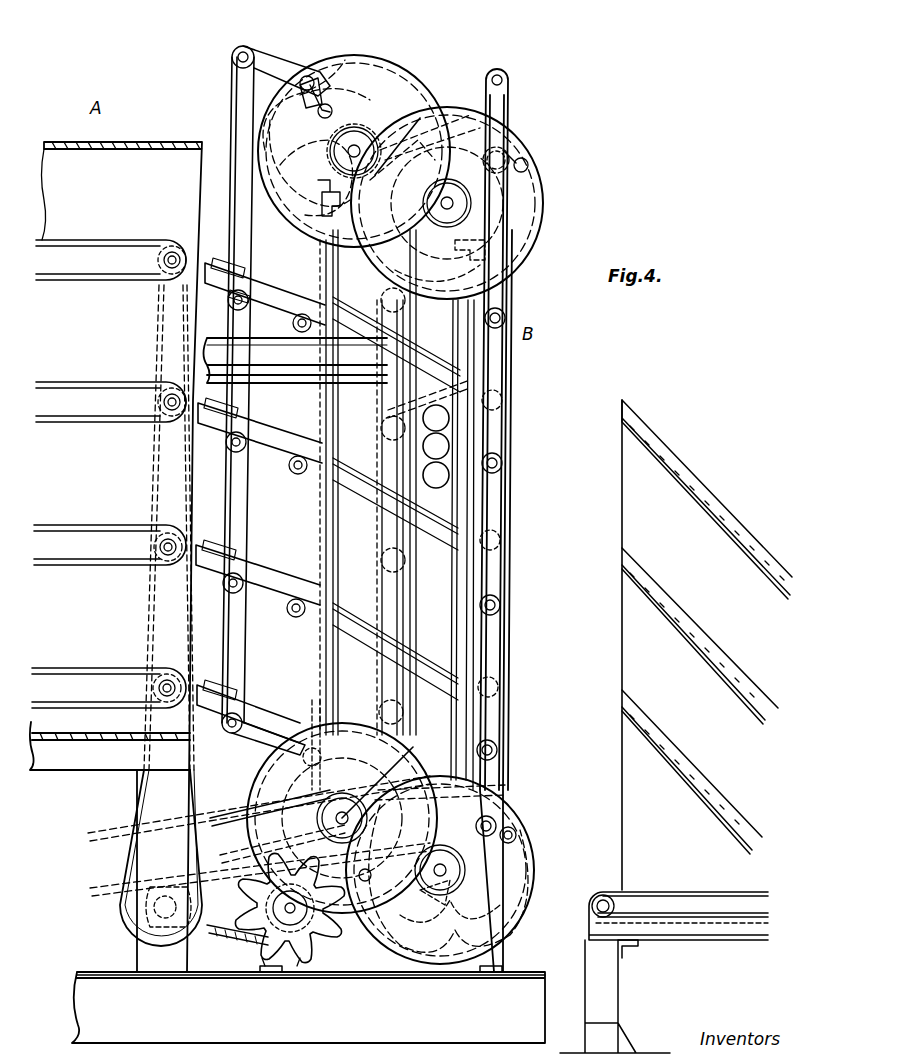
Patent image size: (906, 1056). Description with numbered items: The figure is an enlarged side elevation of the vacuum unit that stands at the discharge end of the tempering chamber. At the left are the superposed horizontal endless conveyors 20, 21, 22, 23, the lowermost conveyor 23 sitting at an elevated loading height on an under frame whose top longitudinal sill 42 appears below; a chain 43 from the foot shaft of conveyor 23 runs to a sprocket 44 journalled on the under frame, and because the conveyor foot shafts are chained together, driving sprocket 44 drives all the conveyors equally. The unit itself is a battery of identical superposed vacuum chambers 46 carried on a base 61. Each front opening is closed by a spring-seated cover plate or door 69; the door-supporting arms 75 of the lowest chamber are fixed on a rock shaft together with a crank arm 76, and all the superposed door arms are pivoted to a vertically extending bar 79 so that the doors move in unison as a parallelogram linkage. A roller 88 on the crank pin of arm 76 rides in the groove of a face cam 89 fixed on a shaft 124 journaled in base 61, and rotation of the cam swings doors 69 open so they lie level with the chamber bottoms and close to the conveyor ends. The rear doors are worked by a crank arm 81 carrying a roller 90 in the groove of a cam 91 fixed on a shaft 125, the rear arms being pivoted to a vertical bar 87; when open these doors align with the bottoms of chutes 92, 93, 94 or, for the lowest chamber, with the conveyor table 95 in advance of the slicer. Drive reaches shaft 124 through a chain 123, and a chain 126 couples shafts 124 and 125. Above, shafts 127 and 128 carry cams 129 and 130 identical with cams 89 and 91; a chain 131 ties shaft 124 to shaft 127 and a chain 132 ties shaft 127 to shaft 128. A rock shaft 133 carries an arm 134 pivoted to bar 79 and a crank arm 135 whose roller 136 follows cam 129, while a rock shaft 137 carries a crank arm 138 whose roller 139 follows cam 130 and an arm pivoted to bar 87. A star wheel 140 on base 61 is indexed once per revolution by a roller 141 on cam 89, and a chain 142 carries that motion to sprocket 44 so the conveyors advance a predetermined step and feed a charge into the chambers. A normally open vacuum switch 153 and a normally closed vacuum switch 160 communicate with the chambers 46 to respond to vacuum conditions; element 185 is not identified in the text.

The endless conveyor 20 is at (104, 247).
The endless conveyor 21 is at (112, 390).
The endless conveyor 22 is at (104, 532).
The lowermost conveyor 23 is at (97, 677).
The top longitudinal sill 42 is at (60, 760).
The chain 43 is at (138, 818).
The sprocket 44 is at (128, 915).
The vacuum chamber 46 is at (447, 444).
The base 61 is at (490, 963).
The cover plate or door 69 is at (282, 297).
The door-supporting arm 75 is at (250, 745).
The crank arm 76 is at (300, 768).
The vertically extending bar 79 is at (232, 172).
The crank arm 81 is at (496, 820).
The vertical bar 87 is at (505, 294).
The roller 88 is at (330, 795).
The face cam 89 is at (268, 838).
The roller 90 is at (517, 835).
The cam 91 is at (498, 930).
The chute 92 is at (622, 410).
The chute 93 is at (622, 557).
The chute 94 is at (622, 710).
The conveyor table 95 is at (652, 892).
The chain 123 is at (112, 872).
The shaft 124 is at (347, 818).
The shaft 125 is at (446, 871).
The chain 126 is at (416, 896).
The shaft 127 is at (356, 145).
The shaft 128 is at (453, 203).
The cam 129 is at (362, 75).
The cam 130 is at (530, 196).
The chain 131 is at (318, 250).
The chain 132 is at (420, 118).
The rock shaft 133 is at (306, 84).
The arm 134 is at (300, 72).
The crank arm 135 is at (322, 78).
The roller 136 is at (318, 111).
The rock shaft 137 is at (504, 152).
The crank arm 138 is at (518, 160).
The roller 139 is at (529, 165).
The star wheel 140 is at (288, 930).
The roller 141 is at (370, 870).
The chain 142 is at (228, 940).
The vacuum switch 153 is at (448, 412).
The vacuum switch 160 is at (450, 446).
The roller 185 is at (446, 478).